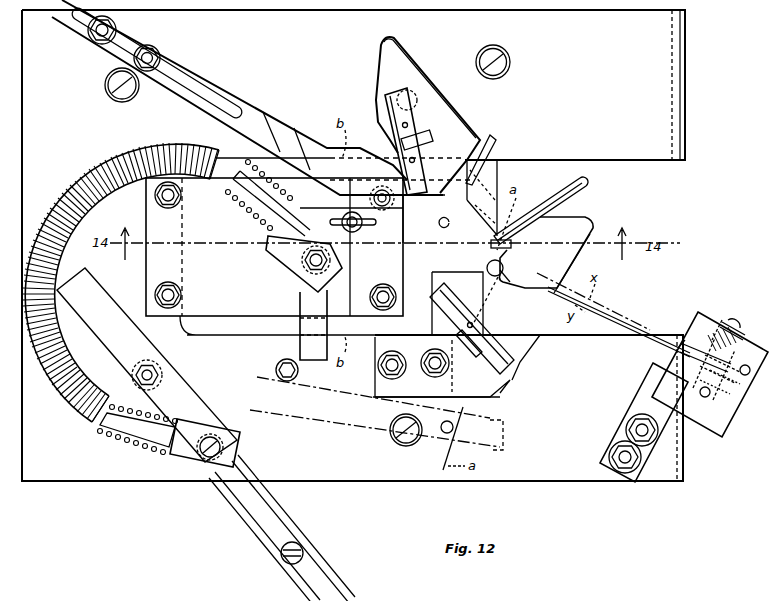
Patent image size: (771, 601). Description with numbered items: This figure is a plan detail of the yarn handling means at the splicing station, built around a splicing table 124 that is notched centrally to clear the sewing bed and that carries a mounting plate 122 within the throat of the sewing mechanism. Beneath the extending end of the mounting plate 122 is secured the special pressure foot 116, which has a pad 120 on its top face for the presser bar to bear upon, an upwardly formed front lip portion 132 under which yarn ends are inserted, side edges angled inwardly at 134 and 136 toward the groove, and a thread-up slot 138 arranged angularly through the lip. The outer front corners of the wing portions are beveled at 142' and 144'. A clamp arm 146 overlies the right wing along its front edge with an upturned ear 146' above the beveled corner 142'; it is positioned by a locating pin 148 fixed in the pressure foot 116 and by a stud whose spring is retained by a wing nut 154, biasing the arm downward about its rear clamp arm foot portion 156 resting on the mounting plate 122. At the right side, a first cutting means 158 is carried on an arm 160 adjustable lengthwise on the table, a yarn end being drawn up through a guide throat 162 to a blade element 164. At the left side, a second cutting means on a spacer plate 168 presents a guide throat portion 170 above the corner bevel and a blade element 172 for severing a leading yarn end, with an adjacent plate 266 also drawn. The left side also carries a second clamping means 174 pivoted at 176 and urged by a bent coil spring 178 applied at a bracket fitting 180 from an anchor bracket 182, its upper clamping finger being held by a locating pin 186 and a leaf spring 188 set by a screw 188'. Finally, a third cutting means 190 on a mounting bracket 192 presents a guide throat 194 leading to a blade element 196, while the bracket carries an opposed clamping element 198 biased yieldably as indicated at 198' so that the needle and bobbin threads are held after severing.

The splicing table 124 is at (678, 95).
The arm 160 is at (236, 88).
The first cutting means 158 is at (440, 108).
The blade element 164 is at (396, 92).
The guide throat 162 is at (394, 132).
The upturned ear 146' is at (504, 185).
The beveled corner portion 142' is at (515, 207).
The angled side edge 134 is at (540, 212).
The thread-up slot 138 is at (515, 246).
The pressure foot 116 is at (611, 221).
The front lip portion 132 is at (583, 262).
The angled side edge 136 is at (510, 284).
The pad 120 is at (503, 270).
The beveled corner portion 144' is at (506, 303).
The rear clamp arm foot portion 156 is at (262, 281).
The mounting plate 122 is at (148, 276).
The clamp arm 146 is at (372, 230).
The locating pin 148 is at (432, 228).
The bent coil spring 178 is at (70, 410).
The wing nut 154 is at (322, 214).
The anchor bracket 182 is at (318, 298).
The pivot 176 is at (160, 370).
The spacer plate 168 is at (445, 388).
The plate 266 is at (512, 370).
The blade element 172 is at (496, 366).
The guide throat portion 170 is at (470, 345).
The second clamping means 174 is at (505, 444).
The locating pin 186 is at (437, 437).
The bracket fitting 180 is at (232, 446).
The leaf spring 188 is at (302, 528).
The screw 188' is at (317, 538).
The mounting bracket 192 is at (625, 408).
The third cutting means 190 is at (738, 432).
The guide throat 194 is at (752, 332).
The blade element 196 is at (735, 412).
The opposed clamping element 198 is at (697, 321).
The bias 198' is at (719, 311).